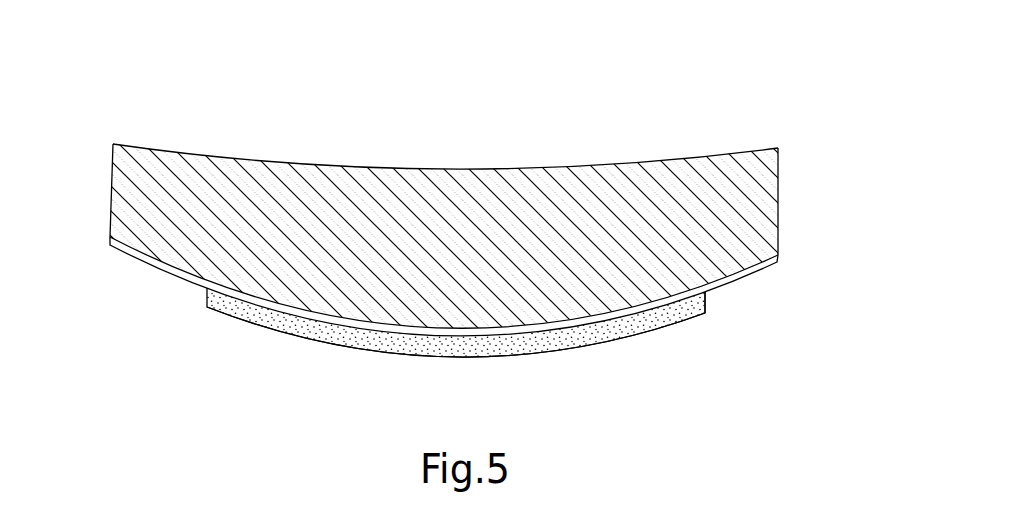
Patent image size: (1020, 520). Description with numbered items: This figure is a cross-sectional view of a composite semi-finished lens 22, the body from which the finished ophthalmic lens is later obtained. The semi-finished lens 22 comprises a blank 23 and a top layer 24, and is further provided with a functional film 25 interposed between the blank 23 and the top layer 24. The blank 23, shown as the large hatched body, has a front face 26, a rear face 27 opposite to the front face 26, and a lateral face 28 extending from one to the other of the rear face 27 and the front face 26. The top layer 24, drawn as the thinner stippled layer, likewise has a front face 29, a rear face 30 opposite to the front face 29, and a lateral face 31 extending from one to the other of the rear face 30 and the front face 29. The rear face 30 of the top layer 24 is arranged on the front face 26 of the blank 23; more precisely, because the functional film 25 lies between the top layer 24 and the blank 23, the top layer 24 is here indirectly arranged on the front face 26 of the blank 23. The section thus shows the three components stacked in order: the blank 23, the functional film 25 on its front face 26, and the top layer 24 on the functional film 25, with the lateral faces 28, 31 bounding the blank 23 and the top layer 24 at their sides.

The semi-finished lens 22 is at (450, 239).
The blank 23 is at (110, 188).
The top layer 24 is at (273, 322).
The functional film 25 is at (172, 272).
The front face 26 is at (556, 329).
The rear face 27 is at (468, 167).
The lateral face 28 is at (782, 212).
The front face 29 is at (422, 362).
The rear face 30 is at (412, 325).
The lateral face 31 is at (715, 298).